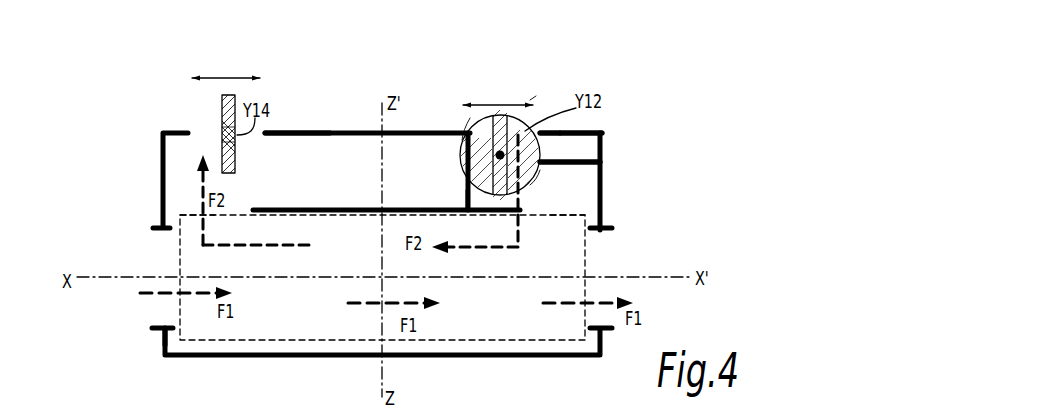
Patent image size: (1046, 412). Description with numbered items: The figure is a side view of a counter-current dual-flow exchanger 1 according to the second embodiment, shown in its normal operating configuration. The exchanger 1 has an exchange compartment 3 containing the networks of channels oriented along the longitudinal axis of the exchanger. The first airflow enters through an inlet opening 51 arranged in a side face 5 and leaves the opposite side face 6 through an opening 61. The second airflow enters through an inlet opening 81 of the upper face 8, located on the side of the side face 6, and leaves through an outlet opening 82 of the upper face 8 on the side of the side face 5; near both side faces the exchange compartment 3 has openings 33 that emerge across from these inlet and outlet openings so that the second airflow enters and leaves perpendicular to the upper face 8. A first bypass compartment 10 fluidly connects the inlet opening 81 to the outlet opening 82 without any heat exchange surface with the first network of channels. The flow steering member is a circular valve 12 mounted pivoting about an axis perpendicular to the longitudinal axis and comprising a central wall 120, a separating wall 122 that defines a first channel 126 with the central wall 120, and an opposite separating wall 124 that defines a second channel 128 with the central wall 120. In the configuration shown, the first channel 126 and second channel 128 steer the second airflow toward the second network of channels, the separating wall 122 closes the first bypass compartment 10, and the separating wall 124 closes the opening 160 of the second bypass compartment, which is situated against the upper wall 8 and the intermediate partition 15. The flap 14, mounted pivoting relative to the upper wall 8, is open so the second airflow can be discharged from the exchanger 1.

The exchanger 1 is at (566, 54).
The exchange compartment 3 is at (382, 370).
The side face 5 is at (143, 174).
The opposite side face 6 is at (630, 178).
The upper face 8 is at (307, 86).
The first bypass compartment 10 is at (386, 128).
The circular valve 12 is at (502, 111).
The flap 14 is at (209, 119).
The intermediate partition 15 is at (622, 133).
The openings 33 is at (374, 198).
The inlet opening 51 is at (119, 346).
The opening 61 is at (441, 277).
The inlet opening 81 is at (498, 92).
The outlet opening 82 is at (226, 65).
The central wall 120 is at (431, 191).
The separating wall 122 is at (440, 131).
The separating wall 124 is at (610, 176).
The first channel 126 is at (440, 77).
The second channel 128 is at (595, 117).
The opening 160 is at (634, 93).